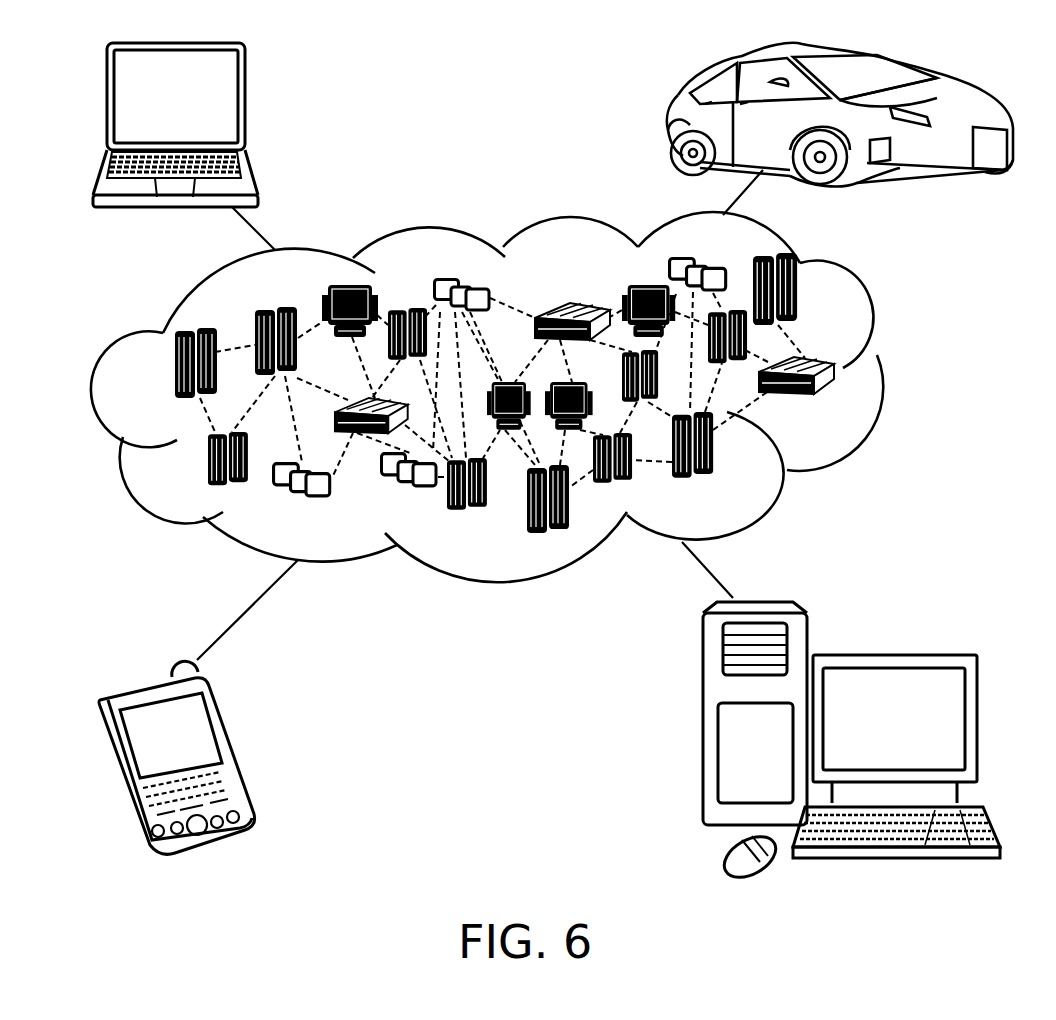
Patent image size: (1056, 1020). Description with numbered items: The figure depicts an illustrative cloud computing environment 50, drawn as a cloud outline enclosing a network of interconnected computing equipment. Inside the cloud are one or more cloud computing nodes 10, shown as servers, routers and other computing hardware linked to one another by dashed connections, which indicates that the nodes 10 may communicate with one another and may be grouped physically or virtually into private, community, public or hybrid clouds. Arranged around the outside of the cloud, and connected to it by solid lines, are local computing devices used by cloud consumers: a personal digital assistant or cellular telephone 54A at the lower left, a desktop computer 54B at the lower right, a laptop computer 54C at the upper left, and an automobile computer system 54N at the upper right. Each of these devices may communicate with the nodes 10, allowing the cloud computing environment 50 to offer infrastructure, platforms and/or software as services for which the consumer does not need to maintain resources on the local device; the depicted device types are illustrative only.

The cloud computing nodes 10 is at (836, 404).
The cloud computing environment 50 is at (893, 376).
The personal digital assistant (PDA) or cellular telephone 54A is at (233, 751).
The desktop computer 54B is at (890, 655).
The laptop computer 54C is at (246, 106).
The automobile computer system 54N is at (675, 121).